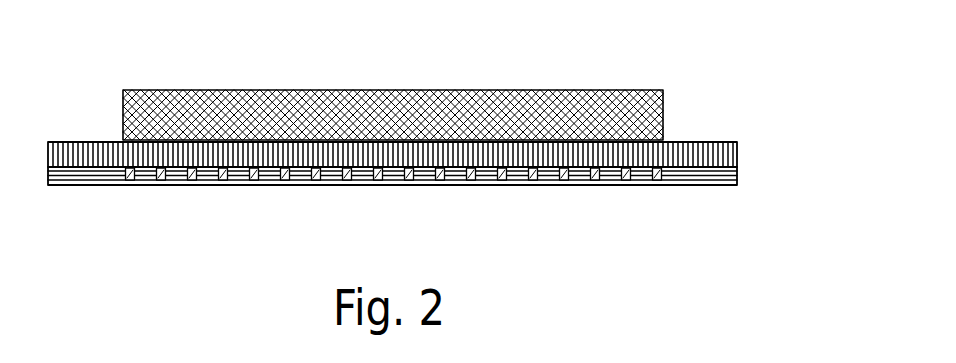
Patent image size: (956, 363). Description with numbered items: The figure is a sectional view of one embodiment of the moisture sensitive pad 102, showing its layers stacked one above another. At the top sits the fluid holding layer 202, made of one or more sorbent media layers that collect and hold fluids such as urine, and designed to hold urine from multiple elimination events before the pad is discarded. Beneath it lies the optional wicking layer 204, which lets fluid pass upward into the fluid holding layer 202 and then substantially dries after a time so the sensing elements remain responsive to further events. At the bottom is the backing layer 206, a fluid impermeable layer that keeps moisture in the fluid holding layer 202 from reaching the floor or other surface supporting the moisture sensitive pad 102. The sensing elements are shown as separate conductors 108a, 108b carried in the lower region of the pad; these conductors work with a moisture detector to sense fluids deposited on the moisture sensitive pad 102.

The moisture sensitive pad 102 is at (99, 68).
The fluid holding layer 202 is at (663, 97).
The wicking layer 204 is at (737, 152).
The backing layer 206 is at (737, 177).
The conductor 108a is at (532, 181).
The conductor 108b is at (624, 181).